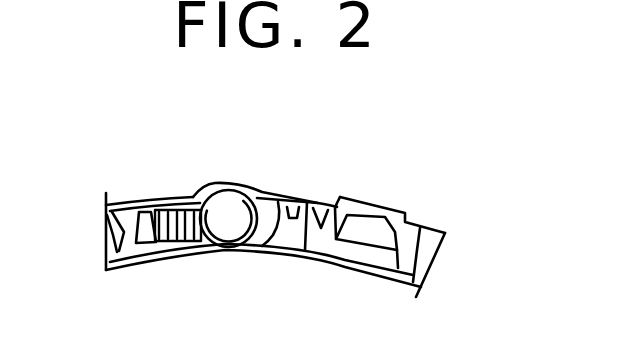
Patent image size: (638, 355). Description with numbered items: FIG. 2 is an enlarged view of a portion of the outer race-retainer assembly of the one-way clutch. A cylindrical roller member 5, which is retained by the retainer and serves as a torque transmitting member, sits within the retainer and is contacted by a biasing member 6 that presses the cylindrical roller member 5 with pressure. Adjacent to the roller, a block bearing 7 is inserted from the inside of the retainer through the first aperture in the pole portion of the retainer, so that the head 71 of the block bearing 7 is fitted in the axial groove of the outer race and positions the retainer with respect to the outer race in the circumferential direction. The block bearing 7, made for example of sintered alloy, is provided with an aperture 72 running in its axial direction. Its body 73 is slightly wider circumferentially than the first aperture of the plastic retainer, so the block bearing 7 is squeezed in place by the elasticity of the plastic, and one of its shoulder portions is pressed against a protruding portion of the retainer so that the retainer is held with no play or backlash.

The cylindrical roller member 5 is at (228, 228).
The biasing member 6 is at (172, 218).
The block bearing 7 is at (358, 253).
The head 71 is at (380, 210).
The aperture 72 is at (427, 258).
The body 73 is at (322, 228).